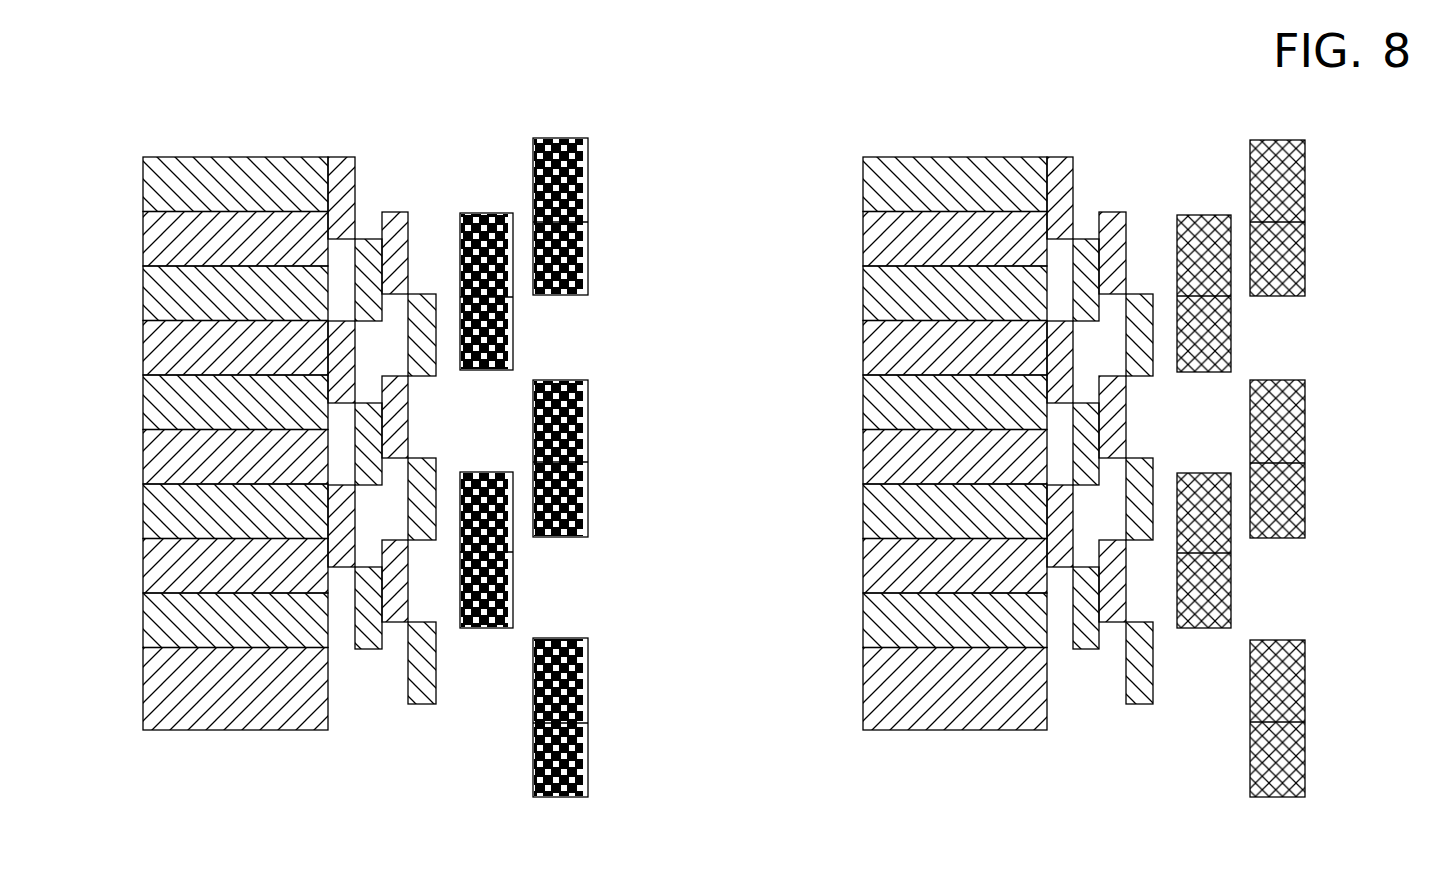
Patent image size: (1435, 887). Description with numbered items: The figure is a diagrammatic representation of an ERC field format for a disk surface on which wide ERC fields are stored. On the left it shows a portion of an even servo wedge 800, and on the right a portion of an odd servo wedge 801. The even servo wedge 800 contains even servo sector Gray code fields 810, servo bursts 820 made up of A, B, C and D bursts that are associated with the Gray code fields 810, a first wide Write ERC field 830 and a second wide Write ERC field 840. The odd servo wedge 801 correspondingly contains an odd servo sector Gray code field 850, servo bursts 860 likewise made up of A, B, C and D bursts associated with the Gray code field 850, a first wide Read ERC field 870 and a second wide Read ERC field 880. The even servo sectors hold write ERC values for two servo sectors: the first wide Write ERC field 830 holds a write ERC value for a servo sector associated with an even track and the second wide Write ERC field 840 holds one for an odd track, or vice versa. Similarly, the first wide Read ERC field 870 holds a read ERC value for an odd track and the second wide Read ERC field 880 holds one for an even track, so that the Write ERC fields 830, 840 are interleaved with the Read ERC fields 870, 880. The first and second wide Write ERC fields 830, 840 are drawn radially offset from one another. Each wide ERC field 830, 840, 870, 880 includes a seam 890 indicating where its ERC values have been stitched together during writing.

The even servo wedge 800 is at (588, 805).
The odd servo wedge 801 is at (1307, 805).
The even servo sector Gray code fields 810 is at (330, 147).
The servo bursts 820 is at (435, 147).
The first wide Write ERC field 830 is at (513, 148).
The second wide Write ERC field 840 is at (588, 130).
The odd servo sector Gray code field 850 is at (1050, 147).
The servo bursts 860 is at (1155, 147).
The first wide Read ERC field 870 is at (1232, 148).
The second wide Read ERC field 880 is at (1306, 130).
The seam 890 is at (588, 222).